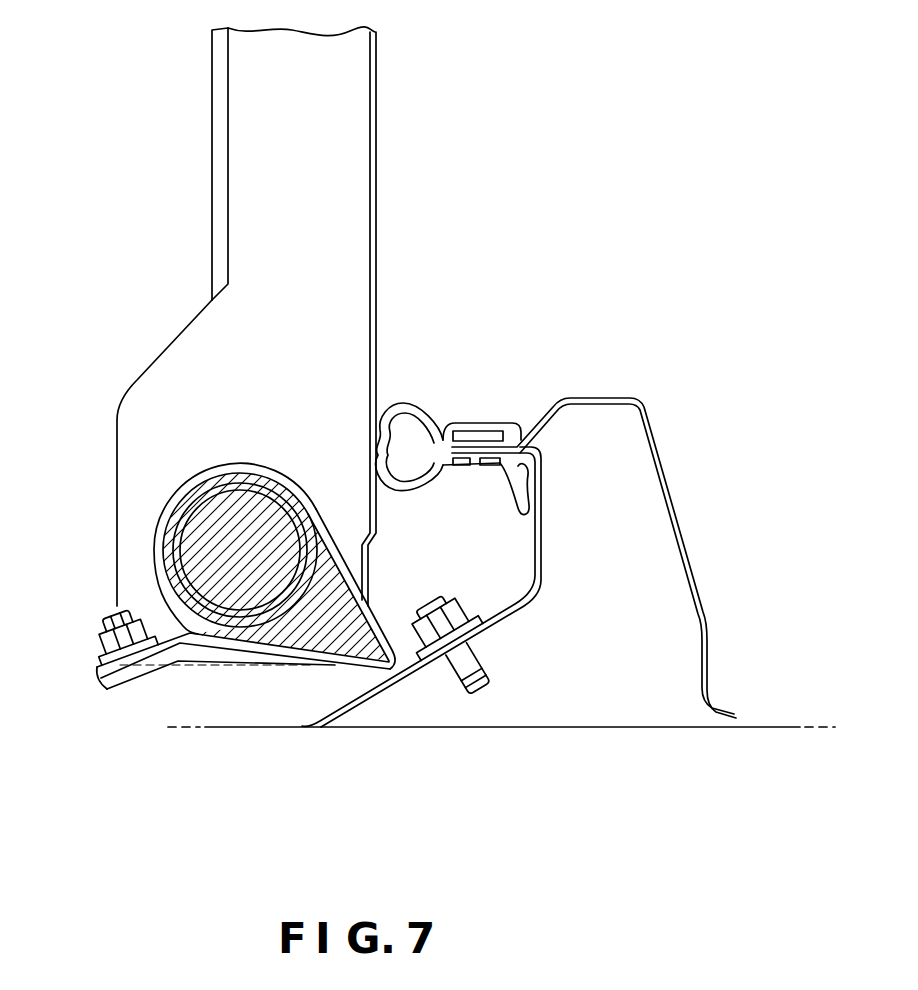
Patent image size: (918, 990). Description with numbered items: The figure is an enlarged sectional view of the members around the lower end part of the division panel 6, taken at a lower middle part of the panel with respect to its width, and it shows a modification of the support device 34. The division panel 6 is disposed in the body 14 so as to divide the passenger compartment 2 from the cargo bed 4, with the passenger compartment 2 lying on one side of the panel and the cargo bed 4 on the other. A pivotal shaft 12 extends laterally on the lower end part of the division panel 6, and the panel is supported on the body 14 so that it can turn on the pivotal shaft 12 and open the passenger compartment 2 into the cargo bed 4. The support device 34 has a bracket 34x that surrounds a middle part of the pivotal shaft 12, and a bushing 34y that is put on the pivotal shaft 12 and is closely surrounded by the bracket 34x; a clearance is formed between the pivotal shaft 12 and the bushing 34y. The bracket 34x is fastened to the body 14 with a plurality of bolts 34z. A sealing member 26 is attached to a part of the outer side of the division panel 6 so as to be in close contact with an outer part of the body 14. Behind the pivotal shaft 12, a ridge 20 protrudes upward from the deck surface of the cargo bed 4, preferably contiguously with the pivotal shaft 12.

The passenger compartment 2 is at (86, 203).
The cargo bed 4 is at (586, 203).
The division panel 6 is at (378, 93).
The pivotal shaft 12 is at (290, 485).
The body 14 is at (452, 745).
The ridge 20 is at (642, 386).
The sealing member 26 is at (425, 405).
The support device 34 is at (248, 455).
The bracket 34x is at (198, 473).
The bushing 34y is at (265, 636).
The bolts 34z is at (93, 638).